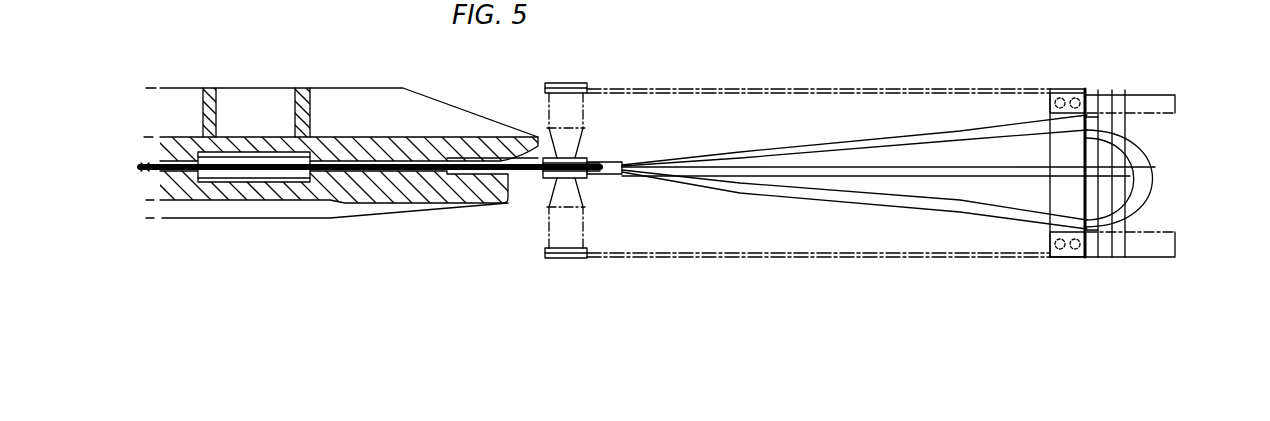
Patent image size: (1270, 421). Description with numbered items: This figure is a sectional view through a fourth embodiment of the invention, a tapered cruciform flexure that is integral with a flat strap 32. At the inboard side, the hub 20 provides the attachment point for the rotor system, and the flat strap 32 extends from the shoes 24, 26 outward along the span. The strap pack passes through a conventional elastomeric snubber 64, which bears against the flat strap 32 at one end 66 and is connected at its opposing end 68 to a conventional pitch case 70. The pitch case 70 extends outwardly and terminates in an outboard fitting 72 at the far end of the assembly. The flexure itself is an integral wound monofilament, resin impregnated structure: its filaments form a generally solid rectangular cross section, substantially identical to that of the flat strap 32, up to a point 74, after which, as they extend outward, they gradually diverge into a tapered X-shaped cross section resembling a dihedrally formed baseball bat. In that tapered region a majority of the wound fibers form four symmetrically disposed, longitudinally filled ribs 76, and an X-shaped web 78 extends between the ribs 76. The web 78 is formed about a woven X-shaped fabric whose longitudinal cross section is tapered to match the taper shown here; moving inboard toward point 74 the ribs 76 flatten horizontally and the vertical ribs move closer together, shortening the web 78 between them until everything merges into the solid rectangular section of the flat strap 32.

The hub 20 is at (403, 86).
The shoe 24 is at (160, 141).
The shoe 26 is at (200, 190).
The flat strap 32 is at (402, 173).
The elastomeric snubber 64 is at (583, 116).
The end of snubber 66 is at (580, 181).
The opposing end of snubber 68 is at (572, 82).
The pitch case 70 is at (822, 256).
The outboard fitting 72 is at (1160, 263).
The point 74 is at (625, 168).
The ribs 76 is at (951, 130).
The X-shaped web 78 is at (1020, 157).